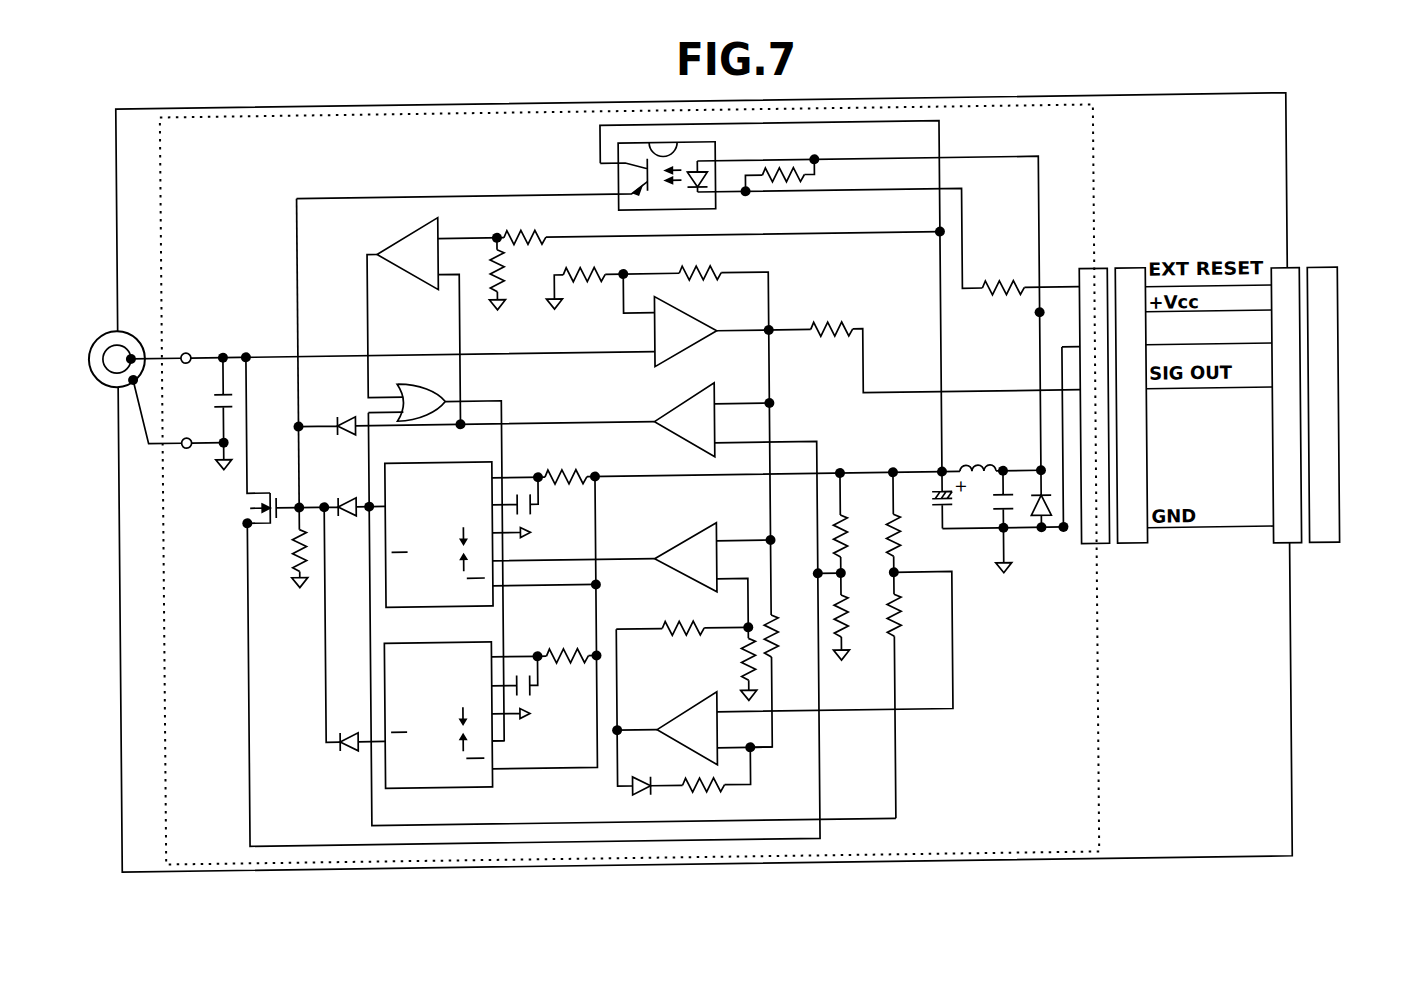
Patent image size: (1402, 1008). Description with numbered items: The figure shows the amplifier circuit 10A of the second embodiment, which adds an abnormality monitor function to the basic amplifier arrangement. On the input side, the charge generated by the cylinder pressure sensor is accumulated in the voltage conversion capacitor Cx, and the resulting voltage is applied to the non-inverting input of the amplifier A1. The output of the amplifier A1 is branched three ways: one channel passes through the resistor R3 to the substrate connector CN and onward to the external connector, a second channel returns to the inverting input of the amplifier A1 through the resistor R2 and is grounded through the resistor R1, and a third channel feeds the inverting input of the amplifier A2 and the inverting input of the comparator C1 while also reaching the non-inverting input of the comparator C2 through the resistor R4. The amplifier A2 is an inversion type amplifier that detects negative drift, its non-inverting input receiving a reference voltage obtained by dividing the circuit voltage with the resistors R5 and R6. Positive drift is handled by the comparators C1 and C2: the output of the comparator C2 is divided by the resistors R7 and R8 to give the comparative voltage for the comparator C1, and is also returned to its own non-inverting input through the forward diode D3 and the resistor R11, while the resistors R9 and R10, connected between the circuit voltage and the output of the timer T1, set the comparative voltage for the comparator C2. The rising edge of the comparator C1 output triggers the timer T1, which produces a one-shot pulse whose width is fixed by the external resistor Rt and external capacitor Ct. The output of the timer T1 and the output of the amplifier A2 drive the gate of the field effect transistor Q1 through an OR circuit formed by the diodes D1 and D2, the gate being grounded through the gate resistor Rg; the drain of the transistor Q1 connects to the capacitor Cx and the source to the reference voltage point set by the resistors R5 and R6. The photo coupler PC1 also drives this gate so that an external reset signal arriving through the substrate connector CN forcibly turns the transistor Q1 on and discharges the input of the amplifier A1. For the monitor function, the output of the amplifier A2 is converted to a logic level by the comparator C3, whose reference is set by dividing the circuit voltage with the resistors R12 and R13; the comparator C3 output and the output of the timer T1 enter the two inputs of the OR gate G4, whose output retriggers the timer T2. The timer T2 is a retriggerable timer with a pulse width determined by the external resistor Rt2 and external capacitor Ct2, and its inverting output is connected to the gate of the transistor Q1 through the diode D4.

The voltage conversion capacitor Cx is at (207, 414).
The field effect transistor Q1 is at (258, 511).
The gate resistor Rg is at (285, 548).
The photo coupler PC1 is at (682, 171).
The resistor R12 is at (689, 222).
The resistor R13 is at (520, 273).
The comparator C3 is at (414, 321).
The OR gate G4 is at (436, 551).
The diode D1 is at (476, 408).
The amplifier A2 is at (707, 420).
The resistor R1 is at (585, 275).
The resistor R2 is at (696, 287).
The amplifier A1 is at (717, 319).
The resistor R3 is at (945, 342).
The resistor R4 is at (791, 635).
The external resistor Rt is at (566, 464).
The substrate connector CN is at (1113, 391).
The amplifier circuit 10A is at (1108, 167).
The timer T1 is at (505, 522).
The external capacitor Ct is at (543, 499).
The diode D2 is at (331, 491).
The diode D4 is at (360, 726).
The timer T2 is at (461, 704).
The external resistor Rt2 is at (566, 643).
The external capacitor Ct2 is at (550, 679).
The comparator C1 is at (710, 574).
The resistor R7 is at (682, 614).
The resistor R8 is at (734, 664).
The comparator C2 is at (785, 668).
The forward diode D3 is at (657, 769).
The resistor R11 is at (723, 782).
The resistor R5 is at (859, 522).
The resistor R6 is at (859, 616).
The resistor R9 is at (911, 522).
The resistor R10 is at (920, 694).